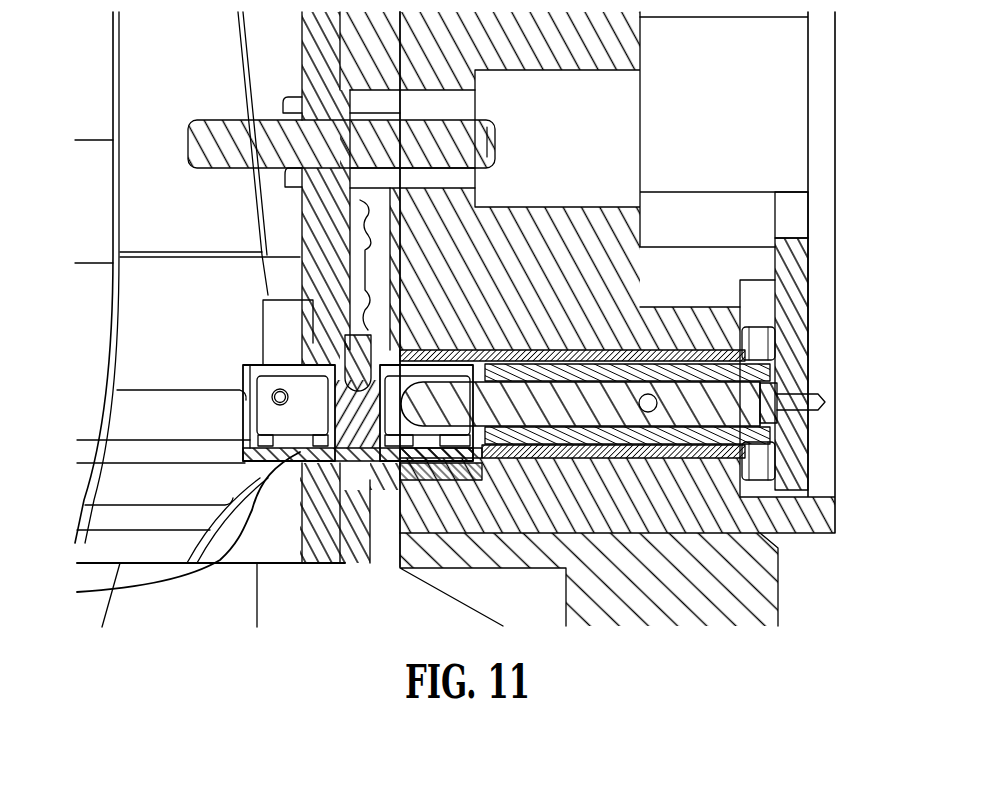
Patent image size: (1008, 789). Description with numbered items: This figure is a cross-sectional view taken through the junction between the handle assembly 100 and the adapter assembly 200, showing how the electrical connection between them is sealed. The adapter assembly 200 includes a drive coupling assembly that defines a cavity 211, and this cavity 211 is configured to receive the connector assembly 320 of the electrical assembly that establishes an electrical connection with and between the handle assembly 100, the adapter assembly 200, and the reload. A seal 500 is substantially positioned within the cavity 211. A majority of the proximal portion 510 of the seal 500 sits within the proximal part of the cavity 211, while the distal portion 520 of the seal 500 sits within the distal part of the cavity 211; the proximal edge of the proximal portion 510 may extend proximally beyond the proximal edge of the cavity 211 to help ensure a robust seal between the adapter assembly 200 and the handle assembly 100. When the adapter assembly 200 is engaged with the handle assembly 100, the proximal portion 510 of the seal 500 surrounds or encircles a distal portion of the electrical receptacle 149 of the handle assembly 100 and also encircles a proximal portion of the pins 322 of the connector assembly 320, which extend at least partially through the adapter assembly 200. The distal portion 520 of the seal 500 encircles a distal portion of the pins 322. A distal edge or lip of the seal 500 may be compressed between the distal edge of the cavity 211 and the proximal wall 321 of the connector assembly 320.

The handle assembly 100 is at (85, 606).
The electrical receptacle 149 is at (393, 388).
The adapter assembly 200 is at (690, 647).
The cavity 211 is at (545, 348).
The connector assembly 320 is at (787, 345).
The proximal wall 321 is at (787, 297).
The pins 322 is at (737, 406).
The seal 500 is at (580, 360).
The proximal portion 510 is at (437, 472).
The distal portion 520 is at (710, 452).